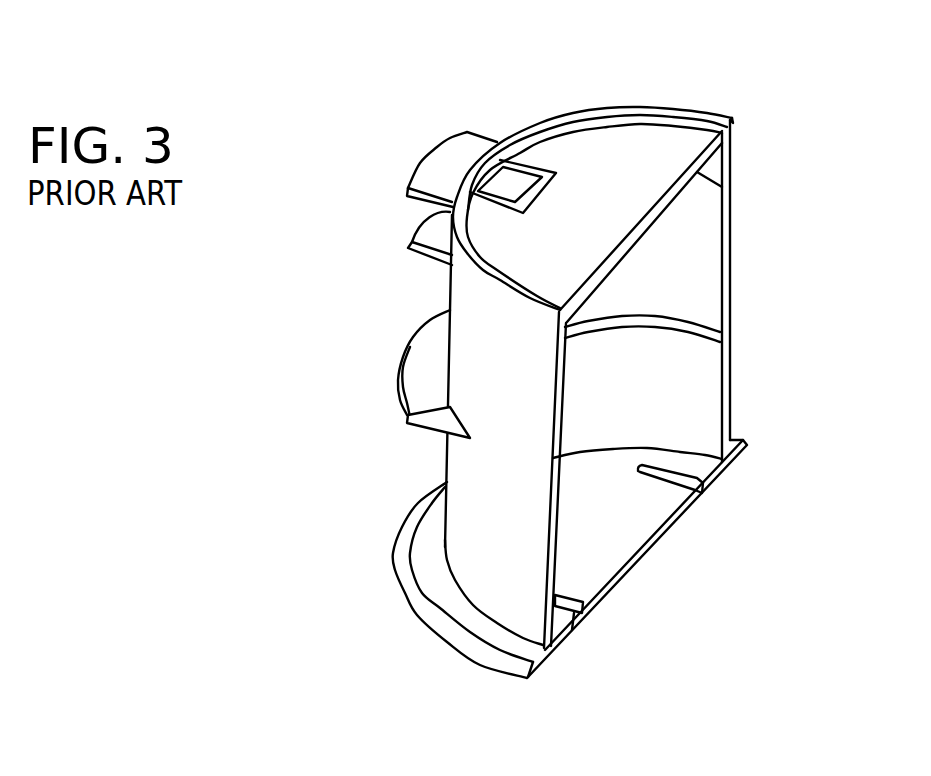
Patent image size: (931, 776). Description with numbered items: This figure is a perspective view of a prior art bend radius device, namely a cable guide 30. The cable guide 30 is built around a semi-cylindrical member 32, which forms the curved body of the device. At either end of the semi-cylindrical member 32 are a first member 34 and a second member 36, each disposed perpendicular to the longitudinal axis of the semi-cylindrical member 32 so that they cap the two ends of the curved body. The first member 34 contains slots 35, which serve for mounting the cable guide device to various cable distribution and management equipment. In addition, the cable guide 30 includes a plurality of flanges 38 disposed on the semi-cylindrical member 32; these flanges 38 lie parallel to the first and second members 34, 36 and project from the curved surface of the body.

The cable guide 30 is at (330, 93).
The semi-cylindrical member 32 is at (462, 527).
The first member 34 is at (620, 535).
The slots 35 is at (587, 613).
The second member 36 is at (650, 147).
The flanges 38 is at (443, 143).